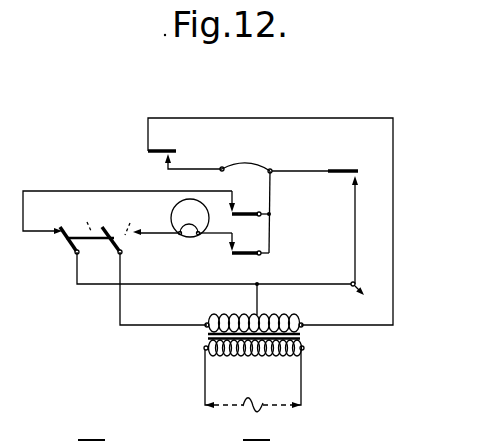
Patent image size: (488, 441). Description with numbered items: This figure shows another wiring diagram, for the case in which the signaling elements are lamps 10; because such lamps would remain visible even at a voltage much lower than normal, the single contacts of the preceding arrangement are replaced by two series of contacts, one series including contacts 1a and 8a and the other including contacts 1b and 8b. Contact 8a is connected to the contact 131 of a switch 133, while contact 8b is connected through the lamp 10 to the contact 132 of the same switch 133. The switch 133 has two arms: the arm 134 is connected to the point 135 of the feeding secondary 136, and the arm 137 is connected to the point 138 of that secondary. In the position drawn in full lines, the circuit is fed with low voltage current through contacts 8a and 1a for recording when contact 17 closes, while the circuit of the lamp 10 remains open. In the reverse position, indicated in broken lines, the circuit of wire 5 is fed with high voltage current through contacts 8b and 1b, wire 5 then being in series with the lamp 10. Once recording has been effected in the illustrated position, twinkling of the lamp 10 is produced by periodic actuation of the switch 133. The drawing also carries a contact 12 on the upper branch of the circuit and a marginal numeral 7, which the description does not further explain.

The contact 12 is at (173, 148).
The wire 5 is at (248, 165).
The contact 17 is at (346, 168).
The contact 8a is at (243, 195).
The contact 1a is at (257, 213).
The contact 8b is at (244, 238).
The contact 1b is at (258, 252).
The lamp 10 is at (172, 213).
The contact 131 is at (54, 231).
The switch 133 is at (78, 229).
The arm 134 is at (70, 242).
The arm 137 is at (105, 245).
The contact 132 is at (140, 234).
The feeding secondary 136 is at (237, 315).
The point 135 is at (258, 315).
The point 138 is at (207, 326).
The reference 7 is at (5, 99).